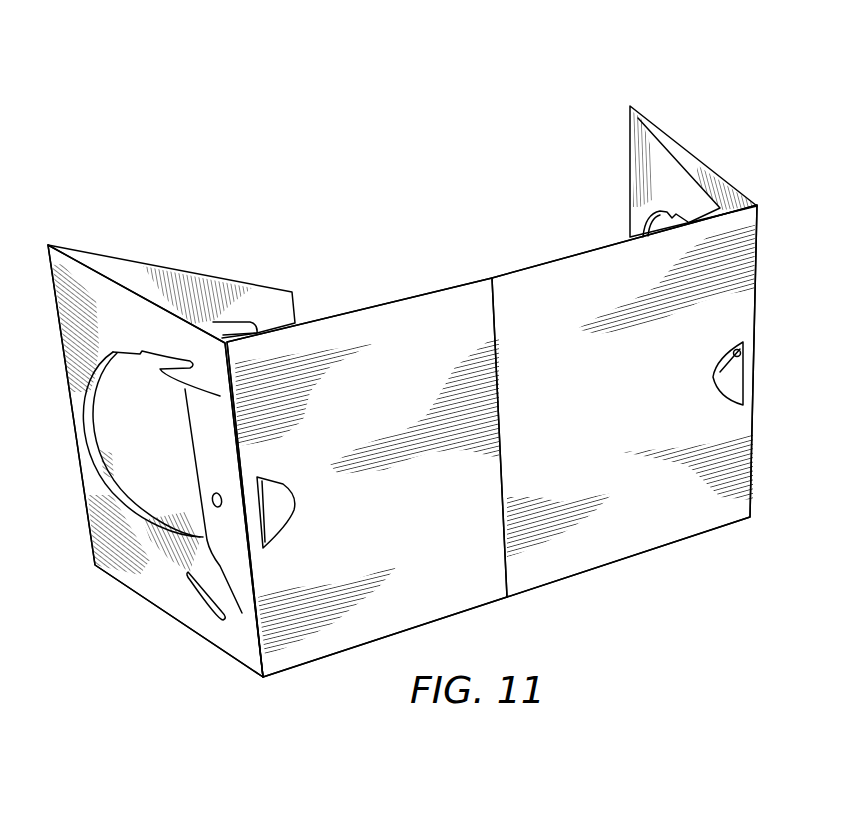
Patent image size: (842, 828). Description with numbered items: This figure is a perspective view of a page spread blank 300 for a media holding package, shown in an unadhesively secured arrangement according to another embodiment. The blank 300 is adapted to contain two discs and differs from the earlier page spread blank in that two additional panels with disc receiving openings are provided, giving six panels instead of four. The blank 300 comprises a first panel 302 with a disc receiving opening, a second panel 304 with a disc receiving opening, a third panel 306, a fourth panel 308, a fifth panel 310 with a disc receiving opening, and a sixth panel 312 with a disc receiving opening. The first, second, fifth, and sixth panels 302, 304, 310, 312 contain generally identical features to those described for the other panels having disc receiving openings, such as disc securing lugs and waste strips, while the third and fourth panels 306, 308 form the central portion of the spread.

The page spread blank 300 is at (318, 118).
The first panel 302 is at (145, 265).
The second panel 304 is at (168, 592).
The third panel 306 is at (325, 630).
The fourth panel 308 is at (630, 522).
The fifth panel 310 is at (712, 172).
The sixth panel 312 is at (668, 182).